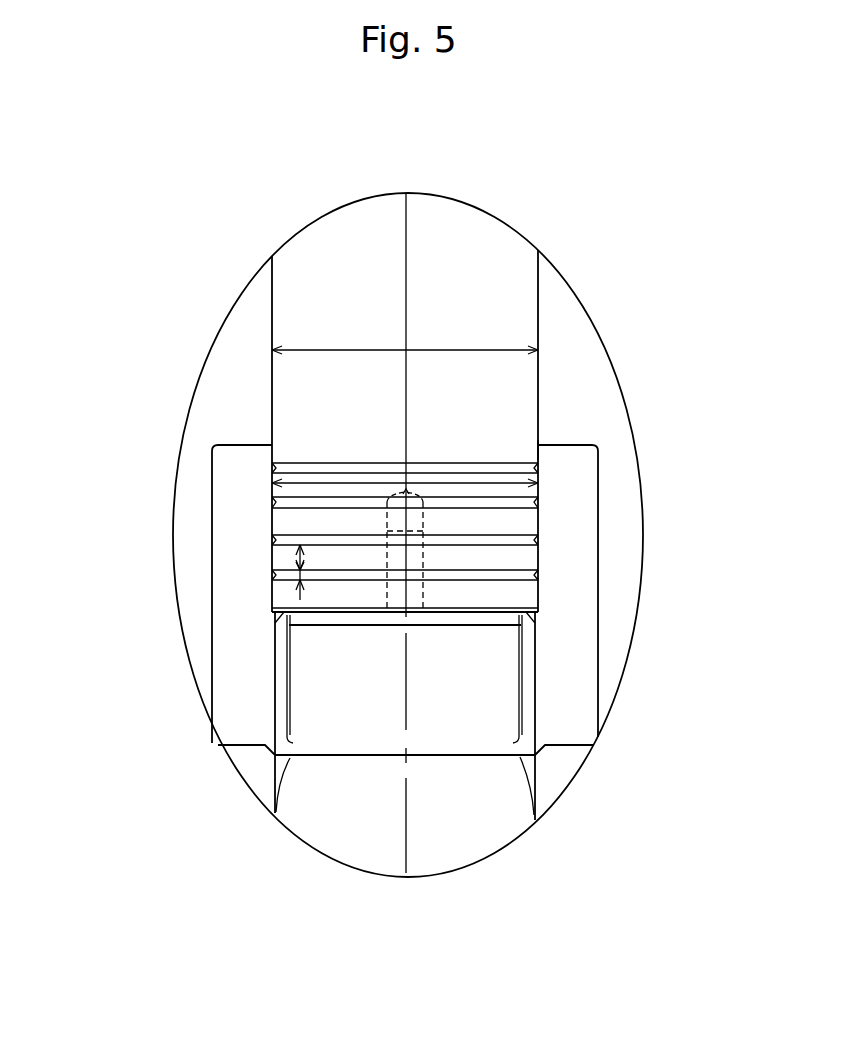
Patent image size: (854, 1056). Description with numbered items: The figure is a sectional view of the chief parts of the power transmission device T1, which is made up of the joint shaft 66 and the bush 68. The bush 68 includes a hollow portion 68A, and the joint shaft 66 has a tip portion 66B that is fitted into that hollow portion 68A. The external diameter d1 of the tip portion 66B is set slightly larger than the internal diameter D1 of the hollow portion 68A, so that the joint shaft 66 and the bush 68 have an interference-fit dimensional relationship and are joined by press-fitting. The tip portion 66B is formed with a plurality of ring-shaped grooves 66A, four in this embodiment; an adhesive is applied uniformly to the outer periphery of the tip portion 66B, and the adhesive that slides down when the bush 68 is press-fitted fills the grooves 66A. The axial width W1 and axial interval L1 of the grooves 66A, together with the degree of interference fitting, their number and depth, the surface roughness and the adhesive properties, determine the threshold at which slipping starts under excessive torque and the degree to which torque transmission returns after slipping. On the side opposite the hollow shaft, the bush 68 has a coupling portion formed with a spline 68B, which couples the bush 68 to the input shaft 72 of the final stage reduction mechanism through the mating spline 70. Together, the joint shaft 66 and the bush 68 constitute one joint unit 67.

The joint shaft 66 is at (466, 260).
The ring-shaped grooves 66A is at (523, 577).
The tip portion 66B is at (248, 528).
The joint unit 67 is at (617, 638).
The bush 68 is at (573, 502).
The hollow portion 68A is at (537, 457).
The spline 68B is at (525, 678).
The spline 70 is at (282, 748).
The input shaft 72 is at (366, 705).
The power transmission device T1 is at (570, 333).
The external diameter d1 is at (405, 340).
The internal diameter D1 is at (363, 480).
The axial interval L1 is at (298, 557).
The axial width W1 is at (297, 582).